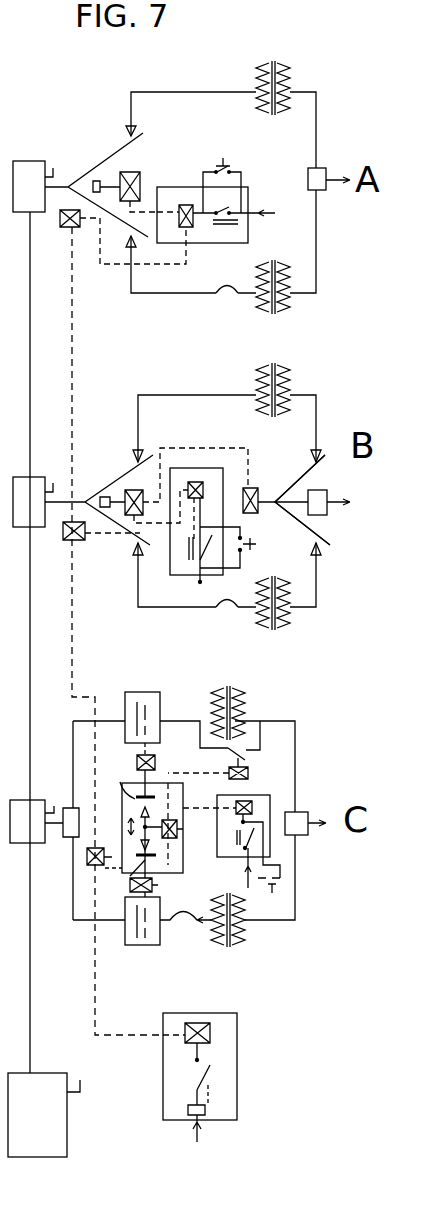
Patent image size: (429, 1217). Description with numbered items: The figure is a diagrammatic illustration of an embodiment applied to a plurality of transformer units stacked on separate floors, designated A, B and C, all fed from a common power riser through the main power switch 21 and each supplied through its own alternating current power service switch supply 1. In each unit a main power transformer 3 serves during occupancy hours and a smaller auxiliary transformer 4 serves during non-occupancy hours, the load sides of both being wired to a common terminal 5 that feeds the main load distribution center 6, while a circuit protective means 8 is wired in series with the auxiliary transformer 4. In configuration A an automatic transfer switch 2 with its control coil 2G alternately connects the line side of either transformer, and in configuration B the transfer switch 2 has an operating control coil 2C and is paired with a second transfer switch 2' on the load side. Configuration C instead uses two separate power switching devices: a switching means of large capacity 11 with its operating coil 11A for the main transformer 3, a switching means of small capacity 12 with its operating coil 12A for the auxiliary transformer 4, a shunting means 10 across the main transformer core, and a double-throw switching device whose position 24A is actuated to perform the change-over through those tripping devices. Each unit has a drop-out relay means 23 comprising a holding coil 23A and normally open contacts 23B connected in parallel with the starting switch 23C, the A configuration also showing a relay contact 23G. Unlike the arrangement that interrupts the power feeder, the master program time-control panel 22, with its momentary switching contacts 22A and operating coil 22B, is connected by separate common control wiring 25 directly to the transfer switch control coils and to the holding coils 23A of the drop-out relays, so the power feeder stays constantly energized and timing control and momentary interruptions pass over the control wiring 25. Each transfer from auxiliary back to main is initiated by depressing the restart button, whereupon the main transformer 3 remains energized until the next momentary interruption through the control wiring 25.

The alternating current power service switch supply 1 is at (47, 170).
The automatic transfer switch 2 is at (123, 375).
The control coil of transfer switch 2G is at (132, 177).
The operating control coil of transfer switch 2C is at (138, 493).
The transfer switch 2' is at (302, 500).
The main power transformer 3 is at (297, 64).
The auxiliary transformer 4 is at (286, 638).
The common terminal 5 is at (298, 818).
The main load distribution center 6 is at (337, 178).
The circuit protective means 8 is at (210, 614).
The shunting means 10 is at (228, 752).
The switching means of large capacity 11 is at (157, 711).
The operating coil of large switching means 11A is at (160, 758).
The switching means of small capacity 12 is at (160, 920).
The operating coil of small switching means 12A is at (162, 888).
The main power switch 21 is at (62, 1137).
The master program time-control panel 22 is at (230, 1088).
The momentary switching contacts 22A is at (196, 1080).
The operating coil of master program timer 22B is at (210, 1028).
The drop-out relay means 23 is at (203, 172).
The holding coil 23A is at (193, 222).
The normally open contacts 23B is at (185, 578).
The starting switch 23C is at (265, 898).
The relay contact 23G is at (248, 163).
The double-throw switch position 24A is at (122, 829).
The common control wiring 25 is at (76, 378).